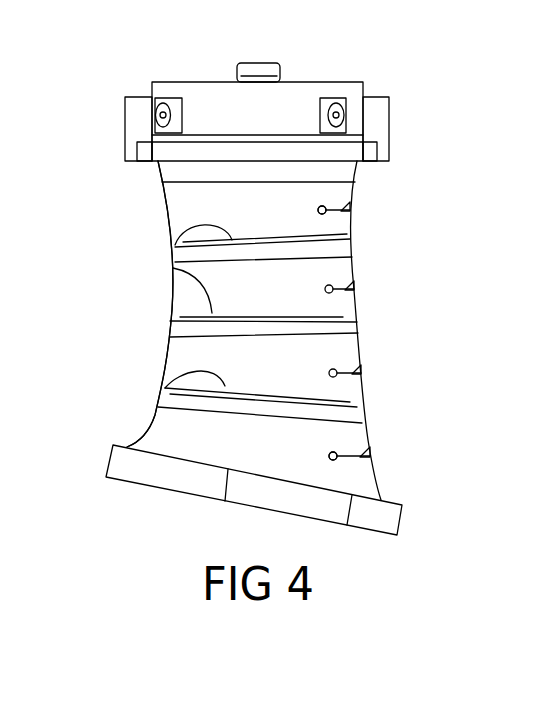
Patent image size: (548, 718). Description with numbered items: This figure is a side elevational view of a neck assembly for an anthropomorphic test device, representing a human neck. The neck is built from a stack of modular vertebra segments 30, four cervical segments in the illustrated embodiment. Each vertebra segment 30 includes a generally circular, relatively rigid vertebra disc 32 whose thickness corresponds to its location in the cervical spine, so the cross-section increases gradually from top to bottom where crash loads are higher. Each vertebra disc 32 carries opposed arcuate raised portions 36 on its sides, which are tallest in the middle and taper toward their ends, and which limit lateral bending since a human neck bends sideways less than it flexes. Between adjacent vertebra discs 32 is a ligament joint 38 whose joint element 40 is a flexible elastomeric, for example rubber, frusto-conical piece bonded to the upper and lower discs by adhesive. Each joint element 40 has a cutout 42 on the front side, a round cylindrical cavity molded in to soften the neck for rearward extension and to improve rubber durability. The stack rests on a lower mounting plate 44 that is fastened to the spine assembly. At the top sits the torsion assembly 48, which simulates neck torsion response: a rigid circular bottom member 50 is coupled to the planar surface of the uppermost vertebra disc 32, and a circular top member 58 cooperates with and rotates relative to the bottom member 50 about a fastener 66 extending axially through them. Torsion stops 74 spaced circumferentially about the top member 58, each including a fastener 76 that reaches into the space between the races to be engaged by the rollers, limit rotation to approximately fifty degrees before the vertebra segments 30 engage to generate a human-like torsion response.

The vertebra segment 30 is at (152, 221).
The vertebra disc 32 is at (167, 173).
The raised portion 36 is at (173, 236).
The ligament joint 38 is at (353, 207).
The joint element 40 is at (195, 205).
The cutout 42 is at (325, 207).
The lower mounting plate 44 is at (170, 472).
The torsion assembly 48 is at (405, 114).
The bottom member 50 is at (140, 127).
The top member 58 is at (217, 82).
The fastener 66 is at (280, 73).
The torsion stop 74 is at (167, 103).
The fastener 76 is at (157, 116).